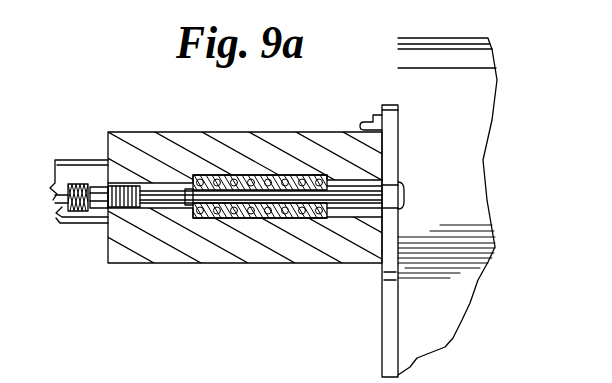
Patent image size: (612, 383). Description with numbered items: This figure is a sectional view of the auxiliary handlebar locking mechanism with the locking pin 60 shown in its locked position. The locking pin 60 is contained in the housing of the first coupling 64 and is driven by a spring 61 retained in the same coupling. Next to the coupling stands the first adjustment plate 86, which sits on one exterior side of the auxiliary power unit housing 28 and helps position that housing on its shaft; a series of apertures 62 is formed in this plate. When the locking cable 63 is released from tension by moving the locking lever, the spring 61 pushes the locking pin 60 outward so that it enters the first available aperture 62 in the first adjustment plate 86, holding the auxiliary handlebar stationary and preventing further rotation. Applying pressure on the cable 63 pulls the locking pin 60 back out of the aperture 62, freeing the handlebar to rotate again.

The auxiliary power unit housing 28 is at (450, 304).
The locking pin 60 is at (345, 192).
The spring 61 is at (225, 208).
The aperture 62 is at (398, 185).
The cable 63 is at (58, 192).
The first coupling 64 is at (213, 132).
The first adjustment plate 86 is at (392, 296).